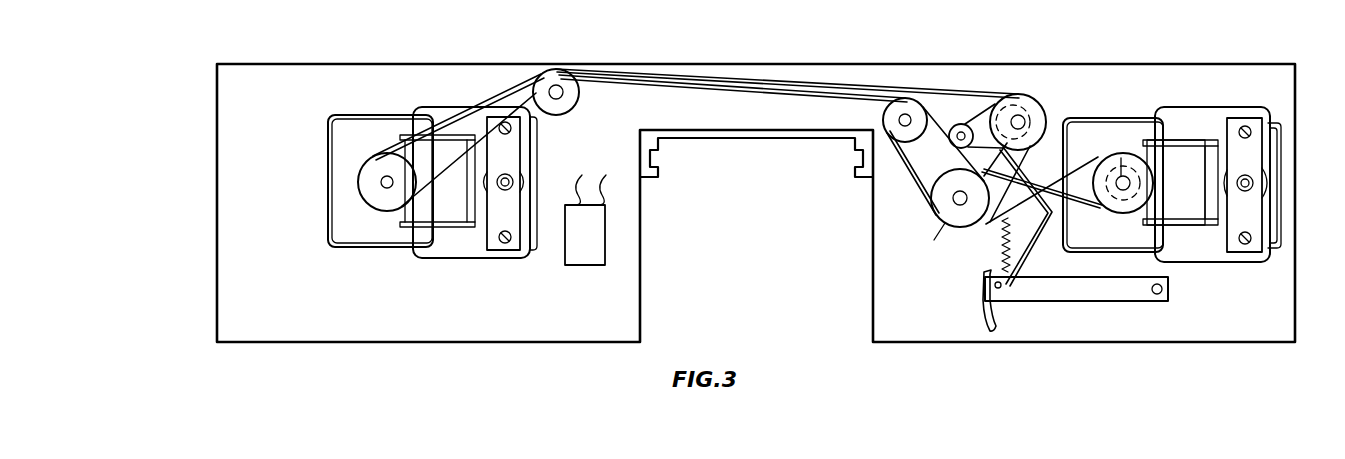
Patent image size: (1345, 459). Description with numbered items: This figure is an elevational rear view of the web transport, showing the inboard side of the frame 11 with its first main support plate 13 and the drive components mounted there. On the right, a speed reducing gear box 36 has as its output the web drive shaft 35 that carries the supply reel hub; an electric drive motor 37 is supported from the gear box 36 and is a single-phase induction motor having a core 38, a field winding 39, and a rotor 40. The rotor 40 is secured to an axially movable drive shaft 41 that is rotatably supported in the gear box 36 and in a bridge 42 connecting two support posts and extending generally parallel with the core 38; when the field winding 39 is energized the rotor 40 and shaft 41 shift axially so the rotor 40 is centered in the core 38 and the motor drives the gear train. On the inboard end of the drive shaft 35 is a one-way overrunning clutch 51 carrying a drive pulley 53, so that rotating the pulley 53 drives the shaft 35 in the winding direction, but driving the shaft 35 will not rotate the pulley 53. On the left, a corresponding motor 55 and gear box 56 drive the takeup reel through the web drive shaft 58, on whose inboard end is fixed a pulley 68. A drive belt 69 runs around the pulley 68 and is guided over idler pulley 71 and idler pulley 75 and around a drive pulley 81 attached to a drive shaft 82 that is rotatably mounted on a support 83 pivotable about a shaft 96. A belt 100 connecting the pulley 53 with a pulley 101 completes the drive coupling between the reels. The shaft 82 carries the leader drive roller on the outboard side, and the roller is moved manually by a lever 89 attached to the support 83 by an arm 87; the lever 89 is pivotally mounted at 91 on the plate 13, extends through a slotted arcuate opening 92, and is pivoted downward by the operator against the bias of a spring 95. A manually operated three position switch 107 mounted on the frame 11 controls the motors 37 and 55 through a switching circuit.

The frame 11 is at (1270, 348).
The first main support plate 13 is at (1250, 334).
The web drive shaft 35 is at (1123, 188).
The gear box 36 is at (1110, 118).
The electric drive motor 37 is at (1273, 112).
The core 38 is at (1238, 264).
The field winding 39 is at (1190, 174).
The rotor 40 is at (1268, 185).
The axially movable drive shaft 41 is at (1250, 194).
The bridge 42 is at (1258, 147).
The one-way overrunning clutch 51 is at (1121, 158).
The drive pulley 53 is at (1153, 190).
The motor 55 is at (440, 262).
The gear box 56 is at (354, 250).
The web drive shaft 58 is at (383, 180).
The pulley 68 is at (374, 203).
The drive belt 69 is at (778, 88).
The idler pulley 71 is at (570, 107).
The idler pulley 75 is at (908, 138).
The drive pulley 81 is at (1019, 95).
The drive shaft 82 is at (1025, 118).
The support 83 is at (973, 142).
The arm 87 is at (1038, 177).
The lever 89 is at (1075, 300).
The pivot 91 is at (1162, 290).
The slotted arcuate opening 92 is at (985, 318).
The spring 95 is at (1000, 248).
The shaft 96 is at (968, 125).
The belt 100 is at (1083, 166).
The pulley 101 is at (945, 218).
The three position switch 107 is at (586, 260).